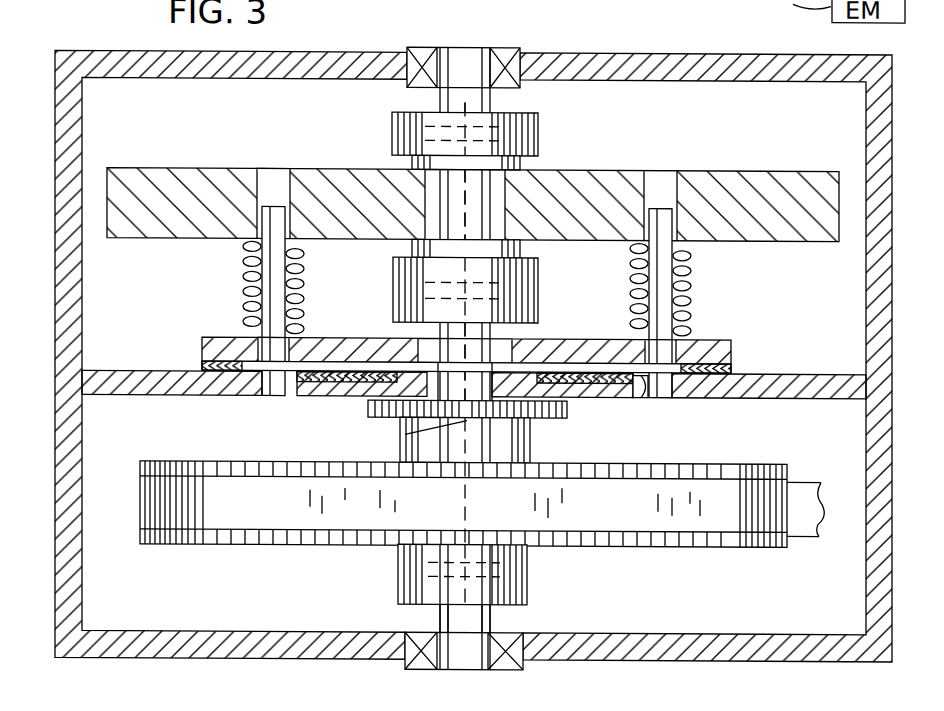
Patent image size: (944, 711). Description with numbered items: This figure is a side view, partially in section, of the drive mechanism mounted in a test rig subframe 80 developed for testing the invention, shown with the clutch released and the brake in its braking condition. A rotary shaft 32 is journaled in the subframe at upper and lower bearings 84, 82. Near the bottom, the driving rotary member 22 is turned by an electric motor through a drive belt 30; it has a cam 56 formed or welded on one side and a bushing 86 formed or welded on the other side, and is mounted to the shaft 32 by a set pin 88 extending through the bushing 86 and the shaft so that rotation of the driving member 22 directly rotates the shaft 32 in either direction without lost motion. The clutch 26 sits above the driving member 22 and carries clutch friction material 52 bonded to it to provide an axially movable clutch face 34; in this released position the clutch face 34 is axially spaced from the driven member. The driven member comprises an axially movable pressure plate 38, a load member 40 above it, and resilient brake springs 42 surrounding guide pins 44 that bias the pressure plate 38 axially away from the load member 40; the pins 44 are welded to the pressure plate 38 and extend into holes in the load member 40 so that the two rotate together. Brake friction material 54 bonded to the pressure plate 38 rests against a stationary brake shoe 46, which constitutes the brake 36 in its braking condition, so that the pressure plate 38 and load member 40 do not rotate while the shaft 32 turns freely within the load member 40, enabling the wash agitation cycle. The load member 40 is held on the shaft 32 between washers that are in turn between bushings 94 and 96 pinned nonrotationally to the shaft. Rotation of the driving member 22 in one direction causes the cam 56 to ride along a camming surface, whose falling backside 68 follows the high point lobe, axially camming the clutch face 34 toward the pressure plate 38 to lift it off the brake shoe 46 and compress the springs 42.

The driving rotary member 22 is at (740, 547).
The clutch 26 is at (360, 411).
The drive belt 30 is at (798, 520).
The shaft 32 is at (492, 100).
The clutch face 34 is at (637, 372).
The brake 36 is at (474, 396).
The pressure plate 38 is at (727, 340).
The load member 40 is at (186, 167).
The brake springs 42 is at (248, 268).
The guide pins 44 is at (277, 291).
The brake shoe 46 is at (702, 385).
The clutch friction material 52 is at (607, 388).
The brake friction material 54 is at (740, 366).
The cam 56 is at (420, 448).
The backside 68 is at (467, 420).
The test rig subframe 80 is at (60, 87).
The bearing 82 is at (424, 632).
The bearing 84 is at (404, 73).
The bushing 86 is at (493, 579).
The set pin 88 is at (527, 561).
The bushing 94 is at (540, 120).
The bushing 96 is at (538, 276).